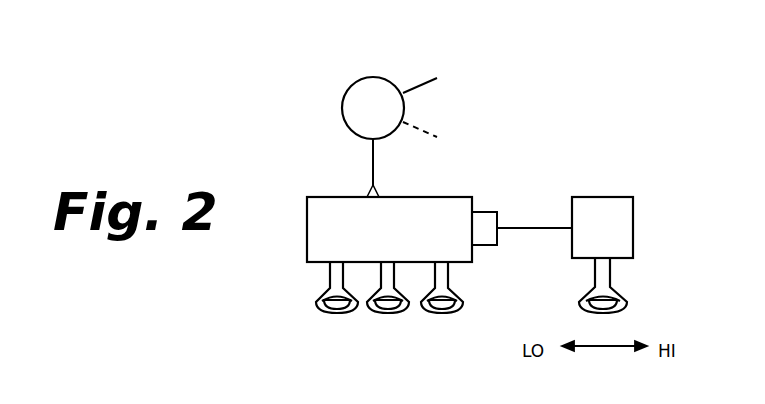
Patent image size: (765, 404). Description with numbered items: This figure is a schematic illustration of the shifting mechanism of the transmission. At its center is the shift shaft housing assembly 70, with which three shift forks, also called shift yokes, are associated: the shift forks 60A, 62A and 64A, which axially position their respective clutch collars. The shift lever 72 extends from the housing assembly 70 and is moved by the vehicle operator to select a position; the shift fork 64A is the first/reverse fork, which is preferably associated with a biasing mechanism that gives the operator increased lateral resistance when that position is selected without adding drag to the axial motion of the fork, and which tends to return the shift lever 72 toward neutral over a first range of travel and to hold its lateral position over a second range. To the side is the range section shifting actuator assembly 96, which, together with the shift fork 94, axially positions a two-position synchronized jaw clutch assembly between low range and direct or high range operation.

The range section shifting actuator assembly 96 is at (422, 78).
The shift lever 72 is at (372, 163).
The shift shaft housing assembly 70 is at (307, 234).
The shift fork 60A is at (325, 280).
The shift fork 62A is at (380, 280).
The shift fork 64A is at (457, 280).
The shift fork 94 is at (612, 268).